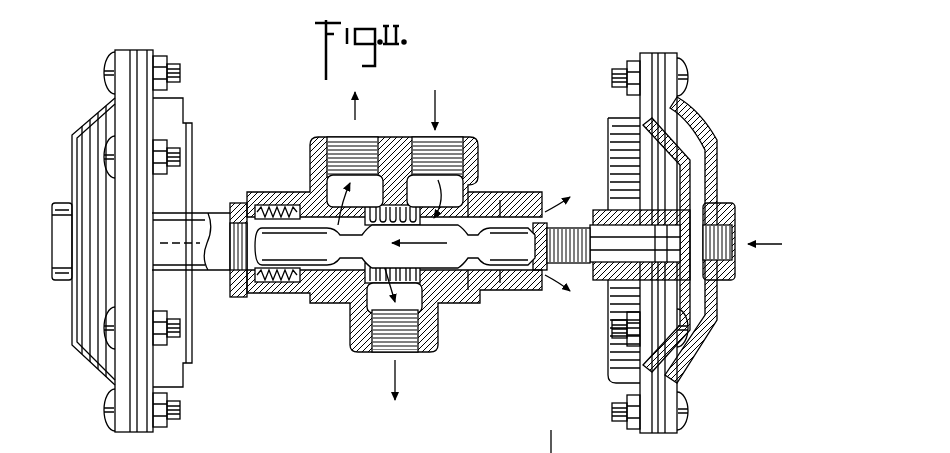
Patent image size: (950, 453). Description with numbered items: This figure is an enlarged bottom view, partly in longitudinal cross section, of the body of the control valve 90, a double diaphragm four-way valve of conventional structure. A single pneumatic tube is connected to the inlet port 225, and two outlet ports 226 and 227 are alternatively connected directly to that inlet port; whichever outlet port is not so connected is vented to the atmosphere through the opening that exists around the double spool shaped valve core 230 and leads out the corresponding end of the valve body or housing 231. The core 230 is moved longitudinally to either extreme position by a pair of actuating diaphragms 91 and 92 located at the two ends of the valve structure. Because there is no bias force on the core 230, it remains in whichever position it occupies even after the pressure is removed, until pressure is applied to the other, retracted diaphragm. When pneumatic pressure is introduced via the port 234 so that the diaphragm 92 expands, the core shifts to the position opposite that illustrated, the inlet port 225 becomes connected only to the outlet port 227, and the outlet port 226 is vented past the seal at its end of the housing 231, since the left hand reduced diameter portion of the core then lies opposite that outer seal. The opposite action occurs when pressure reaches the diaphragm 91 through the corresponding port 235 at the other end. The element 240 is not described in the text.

The control valve 90 is at (566, 82).
The diaphragm 91 is at (90, 114).
The diaphragm 92 is at (683, 141).
The inlet port 225 is at (414, 354).
The outlet port 226 is at (345, 136).
The outlet port 227 is at (446, 138).
The valve core 230 is at (395, 246).
The valve body or housing 231 is at (486, 200).
The port 234 is at (738, 230).
The port 235 is at (50, 238).
The lower element 240 is at (588, 441).